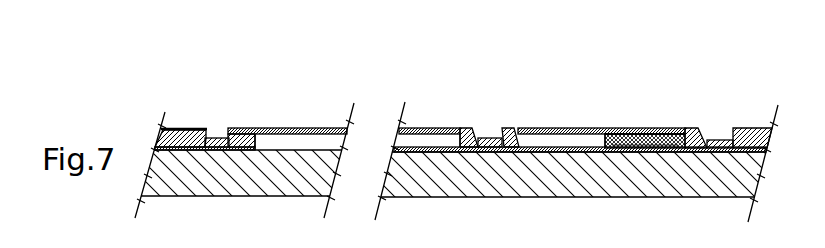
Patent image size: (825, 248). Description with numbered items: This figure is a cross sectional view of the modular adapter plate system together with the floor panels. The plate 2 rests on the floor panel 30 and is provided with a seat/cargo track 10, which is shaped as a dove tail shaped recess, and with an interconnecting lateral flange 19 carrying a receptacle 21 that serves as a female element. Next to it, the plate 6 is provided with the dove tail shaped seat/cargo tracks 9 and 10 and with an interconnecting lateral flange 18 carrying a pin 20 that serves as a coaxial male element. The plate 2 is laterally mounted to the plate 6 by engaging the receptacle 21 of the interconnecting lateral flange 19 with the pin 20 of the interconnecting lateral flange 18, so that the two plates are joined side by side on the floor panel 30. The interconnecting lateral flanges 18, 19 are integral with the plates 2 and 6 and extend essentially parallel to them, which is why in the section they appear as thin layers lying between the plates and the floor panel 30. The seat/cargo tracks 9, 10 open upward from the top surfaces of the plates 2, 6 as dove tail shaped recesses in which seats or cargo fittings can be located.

The plate 2 is at (757, 119).
The plate 6 is at (192, 122).
The seat/cargo track 9 is at (217, 130).
The seat/cargo track 10 is at (487, 130).
The interconnecting lateral flange 18 is at (555, 126).
The interconnecting lateral flange 19 is at (652, 94).
The pin 20 is at (627, 130).
The receptacle 21 is at (650, 127).
The floor panel 30 is at (466, 192).